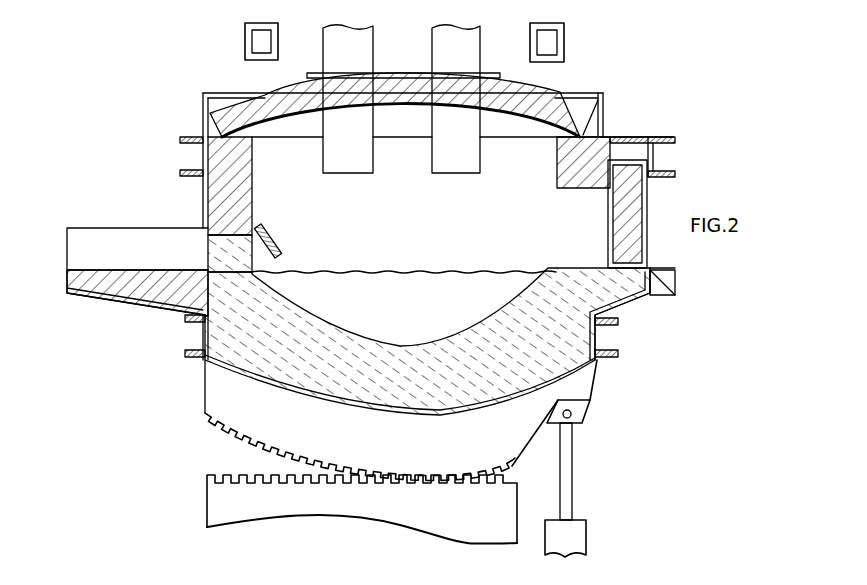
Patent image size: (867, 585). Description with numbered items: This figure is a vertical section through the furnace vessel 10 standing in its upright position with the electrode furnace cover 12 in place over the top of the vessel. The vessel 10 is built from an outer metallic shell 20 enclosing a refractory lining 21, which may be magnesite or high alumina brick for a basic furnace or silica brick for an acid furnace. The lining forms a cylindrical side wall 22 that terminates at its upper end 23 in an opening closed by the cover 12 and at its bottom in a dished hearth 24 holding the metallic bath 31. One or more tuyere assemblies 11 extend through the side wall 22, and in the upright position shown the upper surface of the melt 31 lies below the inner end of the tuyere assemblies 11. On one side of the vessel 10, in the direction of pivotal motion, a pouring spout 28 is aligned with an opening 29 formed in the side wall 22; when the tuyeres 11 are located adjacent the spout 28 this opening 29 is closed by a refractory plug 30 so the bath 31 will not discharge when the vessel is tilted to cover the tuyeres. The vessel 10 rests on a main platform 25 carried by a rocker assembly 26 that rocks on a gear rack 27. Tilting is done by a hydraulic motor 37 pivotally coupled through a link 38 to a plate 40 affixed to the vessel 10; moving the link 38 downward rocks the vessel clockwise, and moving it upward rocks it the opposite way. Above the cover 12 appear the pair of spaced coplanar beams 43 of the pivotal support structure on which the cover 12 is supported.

The furnace vessel 10 is at (136, 186).
The tuyere assembly 11 is at (273, 243).
The first cover 12 is at (230, 92).
The outer metallic shell 20 is at (203, 158).
The refractory lining 21 is at (583, 137).
The cylindrical side wall 22 is at (225, 198).
The upper end 23 is at (205, 120).
The dished hearth 24 is at (390, 340).
The main platform 25 is at (615, 356).
The rocker assembly 26 is at (267, 427).
The gear rack 27 is at (255, 515).
The pouring spout 28 is at (120, 292).
The opening 29 is at (208, 248).
The refractory plug 30 is at (222, 276).
The metallic bath 31 is at (476, 314).
The hydraulic motor 37 is at (572, 542).
The link 38 is at (567, 483).
The plate 40 is at (583, 410).
The beams 43 is at (245, 32).